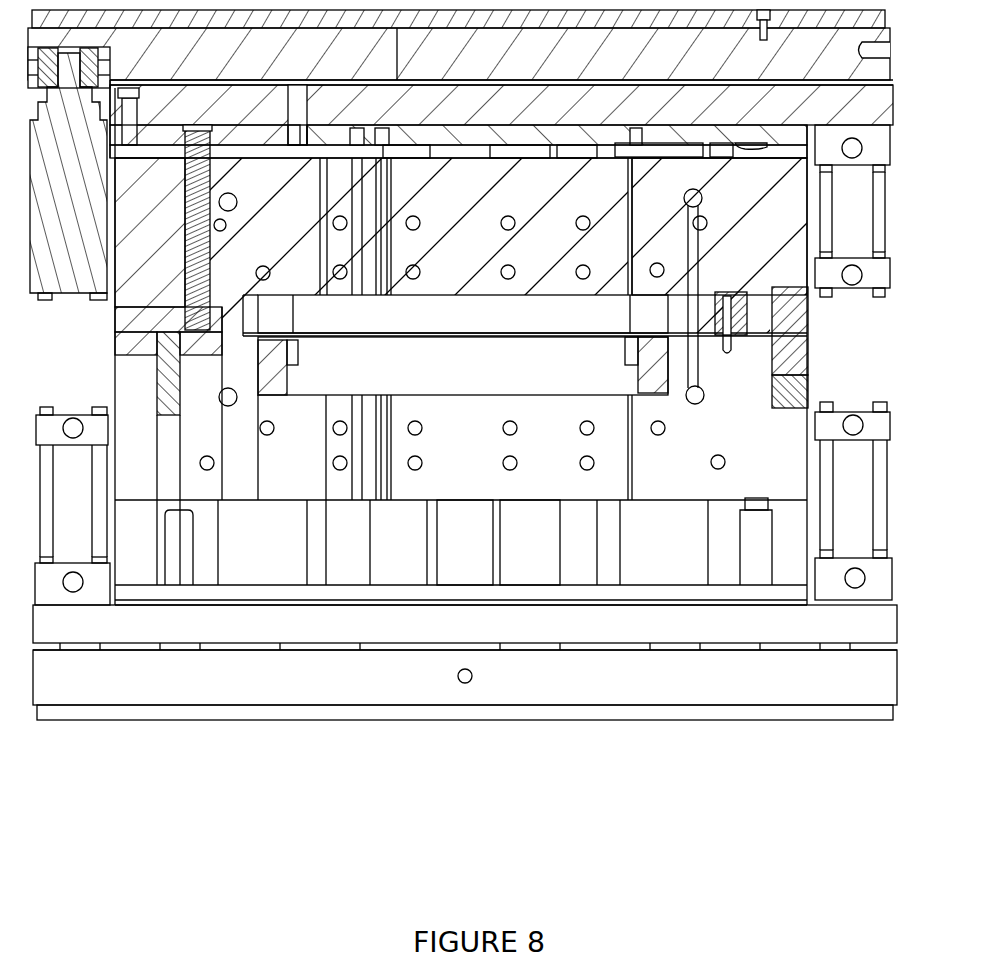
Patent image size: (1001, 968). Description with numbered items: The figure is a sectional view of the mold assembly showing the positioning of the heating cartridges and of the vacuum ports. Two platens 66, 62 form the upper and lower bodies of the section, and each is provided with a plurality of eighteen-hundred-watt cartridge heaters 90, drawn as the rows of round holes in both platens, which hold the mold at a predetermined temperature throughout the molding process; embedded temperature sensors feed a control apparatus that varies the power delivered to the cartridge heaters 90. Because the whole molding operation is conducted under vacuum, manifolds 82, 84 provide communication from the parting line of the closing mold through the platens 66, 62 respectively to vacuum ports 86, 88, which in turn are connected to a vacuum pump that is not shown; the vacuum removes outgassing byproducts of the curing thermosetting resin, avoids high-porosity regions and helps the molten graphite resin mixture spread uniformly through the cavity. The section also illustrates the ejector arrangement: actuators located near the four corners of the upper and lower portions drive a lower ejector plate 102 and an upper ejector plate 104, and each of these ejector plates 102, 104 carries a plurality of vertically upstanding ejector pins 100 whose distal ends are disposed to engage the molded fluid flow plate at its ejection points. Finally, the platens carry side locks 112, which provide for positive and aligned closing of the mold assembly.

The platen 62 is at (732, 336).
The platen 66 is at (719, 226).
The manifold 82 is at (684, 245).
The manifold 84 is at (702, 378).
The vacuum port 86 is at (238, 194).
The vacuum port 88 is at (220, 407).
The cartridge heaters 90 is at (226, 228).
The ejector pins 100 is at (498, 542).
The lower ejector plate 102 is at (465, 624).
The upper ejector plate 104 is at (501, 105).
The side locks 112 is at (812, 365).